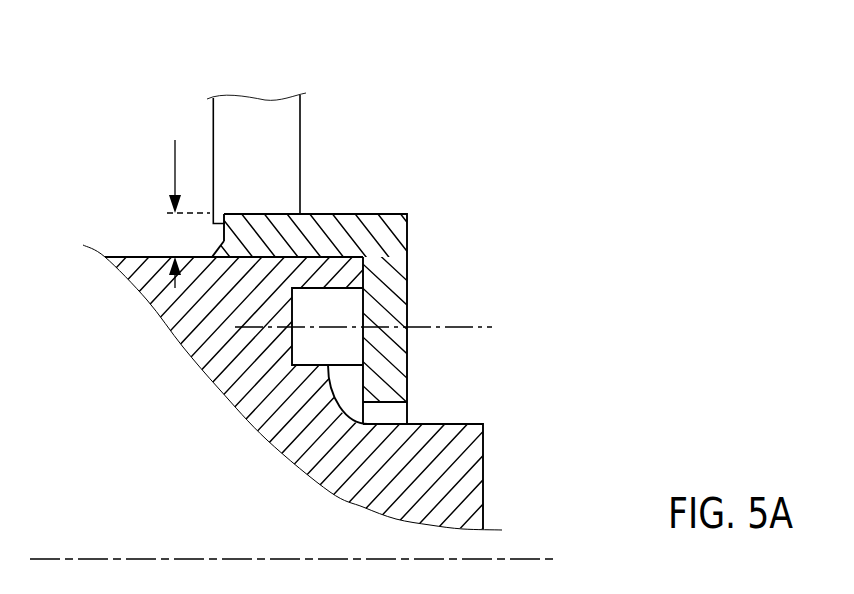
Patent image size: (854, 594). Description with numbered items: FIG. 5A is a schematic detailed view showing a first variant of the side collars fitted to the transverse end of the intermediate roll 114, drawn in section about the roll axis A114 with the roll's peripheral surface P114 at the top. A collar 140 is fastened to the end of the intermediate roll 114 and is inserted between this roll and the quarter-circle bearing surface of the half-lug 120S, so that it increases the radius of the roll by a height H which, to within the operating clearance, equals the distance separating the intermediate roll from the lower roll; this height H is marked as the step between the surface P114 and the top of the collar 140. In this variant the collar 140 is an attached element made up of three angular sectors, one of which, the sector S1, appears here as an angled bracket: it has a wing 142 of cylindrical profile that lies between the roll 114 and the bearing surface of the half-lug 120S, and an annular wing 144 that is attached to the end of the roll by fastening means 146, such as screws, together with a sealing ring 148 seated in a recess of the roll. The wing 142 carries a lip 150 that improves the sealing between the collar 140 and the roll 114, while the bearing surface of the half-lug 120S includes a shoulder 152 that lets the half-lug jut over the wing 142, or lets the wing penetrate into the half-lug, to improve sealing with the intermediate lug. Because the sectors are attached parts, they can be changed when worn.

The intermediate roll 114 is at (467, 470).
The first surface of housing P114 is at (137, 255).
The axis of housing A114 is at (97, 558).
The collar 140 is at (430, 233).
The wing of cylindrical profile 142 is at (257, 243).
The annular wing 144 is at (397, 367).
The fastening means 146 is at (453, 325).
The sealing ring 148 is at (311, 357).
The lip 150 is at (223, 243).
The shoulder 152 is at (219, 221).
The half-lug 120S is at (283, 110).
The angular sector S1 is at (333, 232).
The height H is at (188, 214).